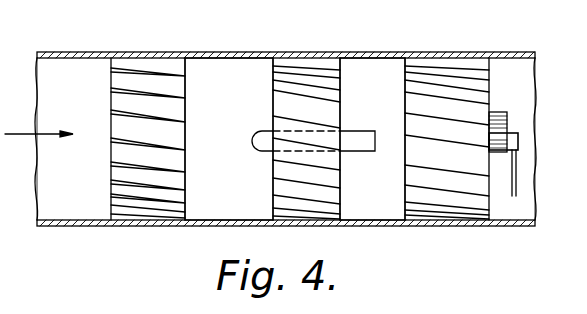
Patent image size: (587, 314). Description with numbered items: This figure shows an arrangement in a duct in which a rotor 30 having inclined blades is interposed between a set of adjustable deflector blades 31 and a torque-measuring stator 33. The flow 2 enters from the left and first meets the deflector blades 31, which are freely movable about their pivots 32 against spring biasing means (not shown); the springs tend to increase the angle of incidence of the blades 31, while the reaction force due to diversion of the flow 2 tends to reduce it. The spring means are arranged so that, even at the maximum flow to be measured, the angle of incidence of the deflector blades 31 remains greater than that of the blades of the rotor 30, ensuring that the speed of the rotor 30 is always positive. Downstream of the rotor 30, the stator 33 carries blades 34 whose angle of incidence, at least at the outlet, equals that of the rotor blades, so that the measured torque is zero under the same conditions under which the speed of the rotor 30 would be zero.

The flow 2 is at (39, 151).
The rotor 30 is at (297, 70).
The deflector blades 31 is at (170, 97).
The pivots 32 is at (113, 112).
The stator 33 is at (406, 85).
The blades 34 is at (445, 80).